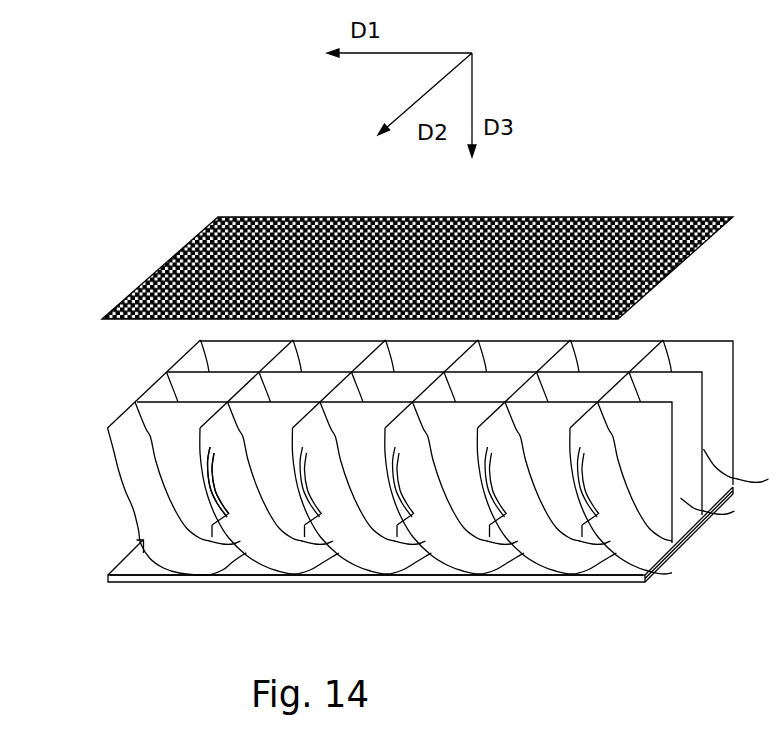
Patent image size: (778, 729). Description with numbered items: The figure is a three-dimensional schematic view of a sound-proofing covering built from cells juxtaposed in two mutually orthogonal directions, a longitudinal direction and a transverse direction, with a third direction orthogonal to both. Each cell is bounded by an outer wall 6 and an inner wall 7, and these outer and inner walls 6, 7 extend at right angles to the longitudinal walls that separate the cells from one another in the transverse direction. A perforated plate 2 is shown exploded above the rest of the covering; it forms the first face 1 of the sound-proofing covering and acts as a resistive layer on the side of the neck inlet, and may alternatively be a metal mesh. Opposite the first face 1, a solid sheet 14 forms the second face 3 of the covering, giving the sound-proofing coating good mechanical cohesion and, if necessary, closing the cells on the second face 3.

The first face 1 is at (399, 394).
The perforated plate 2 is at (652, 290).
The second face 3 is at (647, 608).
The outer wall 6 is at (133, 453).
The inner wall 7 is at (195, 507).
The solid sheet 14 is at (432, 568).